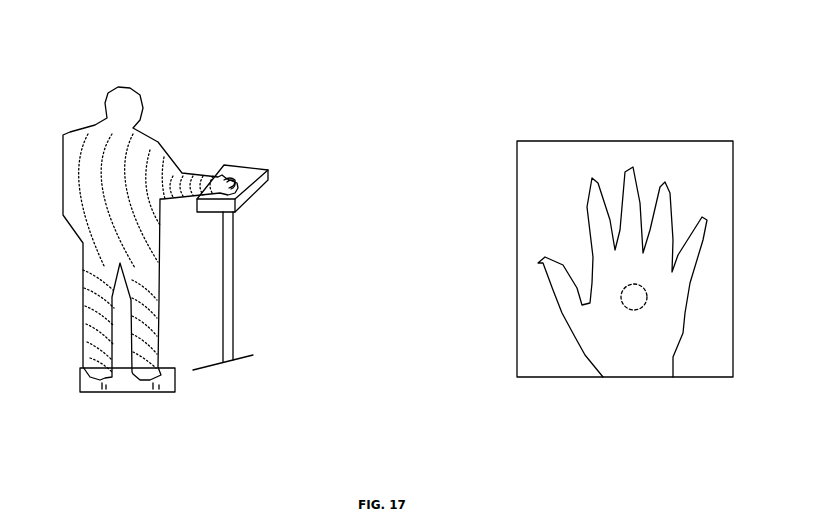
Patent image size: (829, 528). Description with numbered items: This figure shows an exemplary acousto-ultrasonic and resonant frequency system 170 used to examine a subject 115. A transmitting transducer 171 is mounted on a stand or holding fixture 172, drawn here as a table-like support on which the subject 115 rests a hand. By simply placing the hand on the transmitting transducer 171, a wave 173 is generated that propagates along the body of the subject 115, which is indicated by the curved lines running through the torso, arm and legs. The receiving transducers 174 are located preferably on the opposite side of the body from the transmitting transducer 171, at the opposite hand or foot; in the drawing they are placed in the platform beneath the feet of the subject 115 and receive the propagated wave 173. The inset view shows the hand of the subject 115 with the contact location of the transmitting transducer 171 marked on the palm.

The system 170 is at (329, 88).
The subject 115 is at (78, 151).
The wave 173 is at (150, 151).
The stand or holding fixture 172 is at (252, 172).
The transmitting transducer 171 is at (238, 183).
The receiving transducers 174 is at (153, 389).